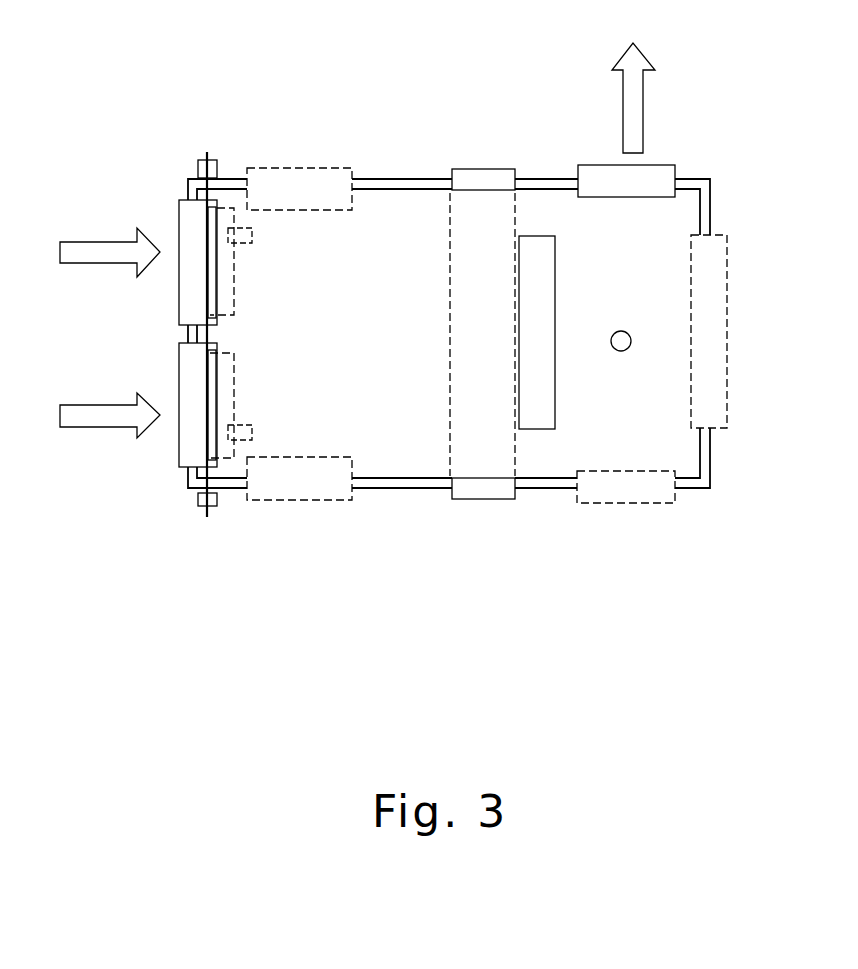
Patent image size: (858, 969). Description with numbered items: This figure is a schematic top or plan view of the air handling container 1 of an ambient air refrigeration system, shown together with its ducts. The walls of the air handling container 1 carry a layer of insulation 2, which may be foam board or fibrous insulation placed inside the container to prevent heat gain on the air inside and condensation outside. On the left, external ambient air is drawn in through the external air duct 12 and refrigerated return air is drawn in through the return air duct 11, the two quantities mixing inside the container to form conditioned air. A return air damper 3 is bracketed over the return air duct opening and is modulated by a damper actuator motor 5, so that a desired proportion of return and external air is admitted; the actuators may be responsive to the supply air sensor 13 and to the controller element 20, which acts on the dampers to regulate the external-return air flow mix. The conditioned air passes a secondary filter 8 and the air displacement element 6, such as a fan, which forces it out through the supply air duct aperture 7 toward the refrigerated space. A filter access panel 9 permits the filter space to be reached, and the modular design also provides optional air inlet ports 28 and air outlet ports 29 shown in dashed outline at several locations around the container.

The air handling container 1 is at (393, 177).
The insulation 2 is at (243, 213).
The return air damper 3 is at (238, 405).
The damper actuator motor 5 is at (215, 158).
The air displacement element 6 is at (538, 232).
The supply air duct aperture 7 is at (667, 158).
The secondary filter 8 is at (458, 432).
The filter access panel 9 is at (488, 168).
The return air duct 11 is at (177, 460).
The external air duct 12 is at (177, 207).
The supply air sensor 13 is at (637, 339).
The controller element 20 is at (205, 155).
The air inlet port 28 is at (330, 212).
The air outlet port 29 is at (728, 418).